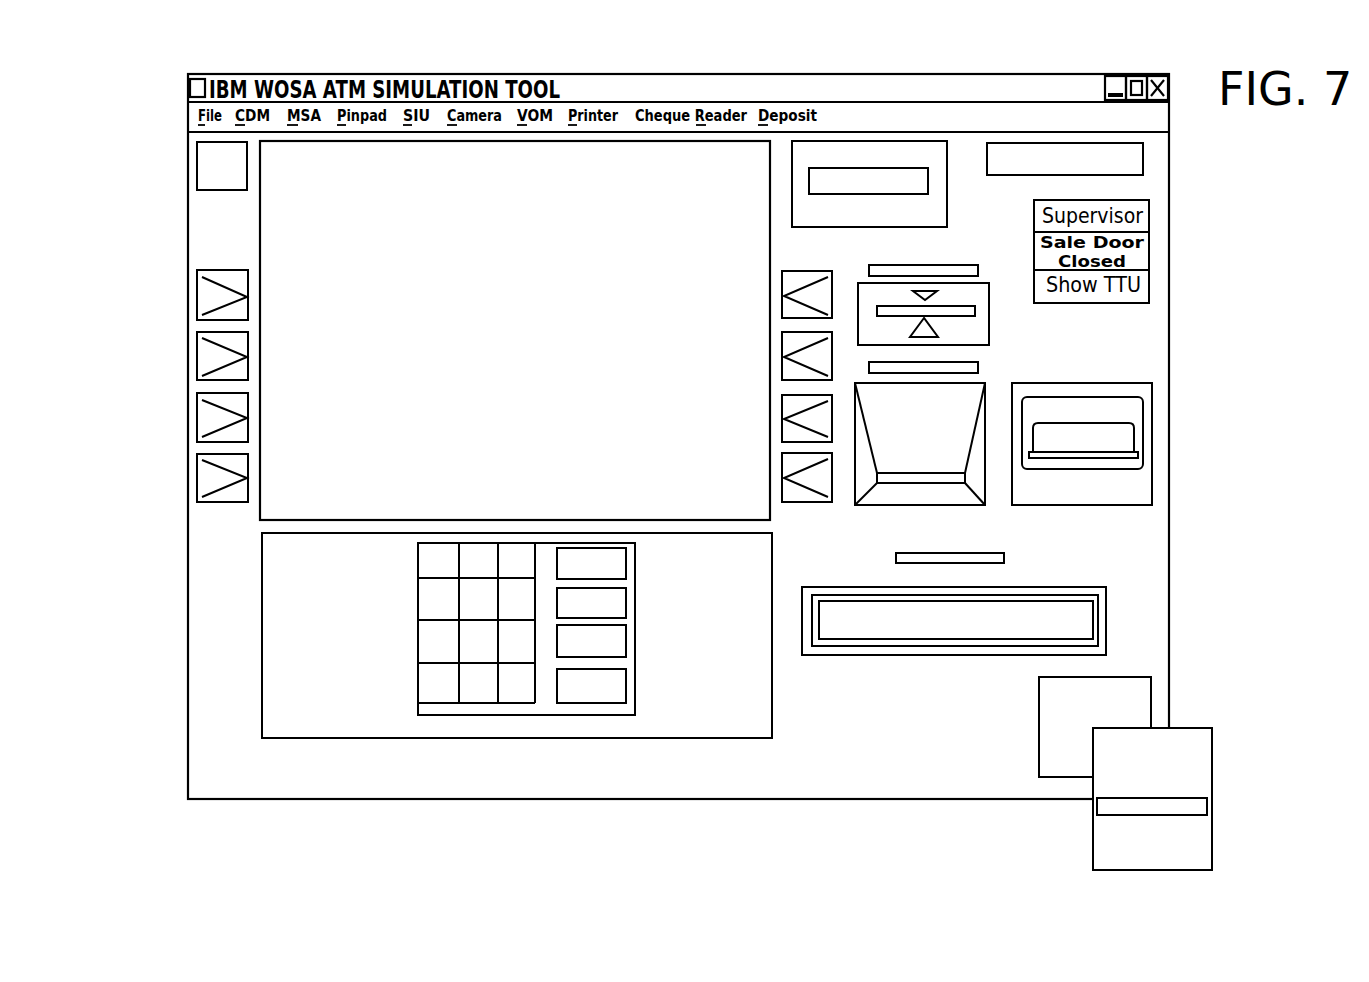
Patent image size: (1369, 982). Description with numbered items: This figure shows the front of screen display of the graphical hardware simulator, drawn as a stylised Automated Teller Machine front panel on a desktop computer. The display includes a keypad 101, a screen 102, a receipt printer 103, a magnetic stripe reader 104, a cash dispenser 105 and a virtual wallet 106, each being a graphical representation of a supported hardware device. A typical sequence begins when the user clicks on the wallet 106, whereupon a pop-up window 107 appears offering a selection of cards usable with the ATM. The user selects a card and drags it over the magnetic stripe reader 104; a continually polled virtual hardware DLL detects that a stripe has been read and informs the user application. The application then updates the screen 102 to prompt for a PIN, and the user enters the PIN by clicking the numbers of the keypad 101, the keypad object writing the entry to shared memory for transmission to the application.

The keypad 101 is at (505, 653).
The screen 102 is at (257, 229).
The receipt printer 103 is at (862, 170).
The magnetic stripe reader 104 is at (958, 320).
The cash dispenser 105 is at (915, 629).
The virtual wallet 106 is at (1063, 769).
The pop-up window 107 is at (1212, 771).